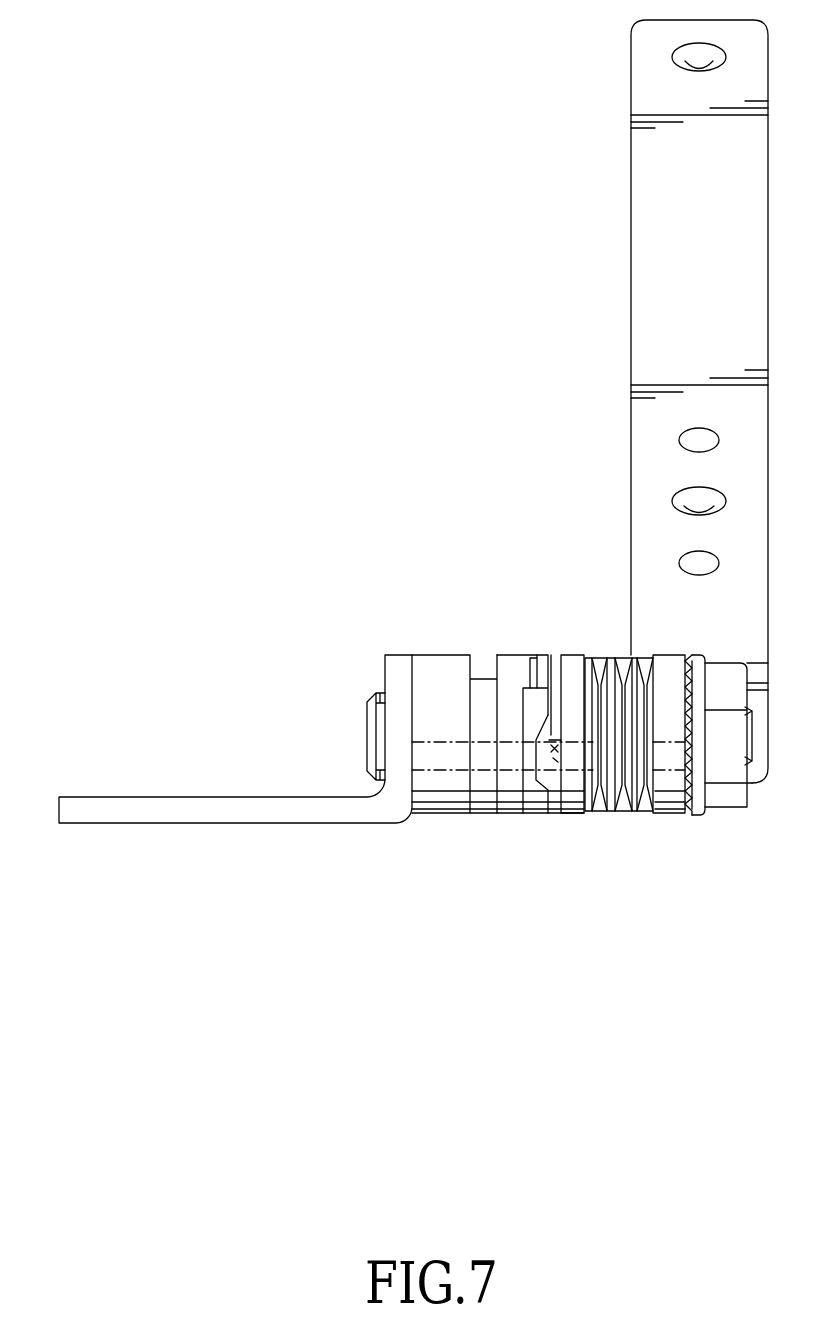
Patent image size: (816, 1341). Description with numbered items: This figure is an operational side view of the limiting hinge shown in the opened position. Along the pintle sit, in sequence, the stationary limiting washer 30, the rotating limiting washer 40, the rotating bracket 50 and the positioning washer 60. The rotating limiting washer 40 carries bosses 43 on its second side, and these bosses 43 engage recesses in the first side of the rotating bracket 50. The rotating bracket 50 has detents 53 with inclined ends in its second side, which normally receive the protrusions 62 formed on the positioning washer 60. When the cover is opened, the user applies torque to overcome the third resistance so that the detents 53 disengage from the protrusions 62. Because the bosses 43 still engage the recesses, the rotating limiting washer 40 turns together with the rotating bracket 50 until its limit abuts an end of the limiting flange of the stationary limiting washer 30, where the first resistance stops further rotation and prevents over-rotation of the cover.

The stationary limiting washer 30 is at (483, 683).
The rotating limiting washer 40 is at (512, 803).
The boss 43 is at (527, 663).
The rotating bracket 50 is at (529, 812).
The detent 53 is at (547, 802).
The positioning washer 60 is at (573, 660).
The protrusion 62 is at (553, 743).